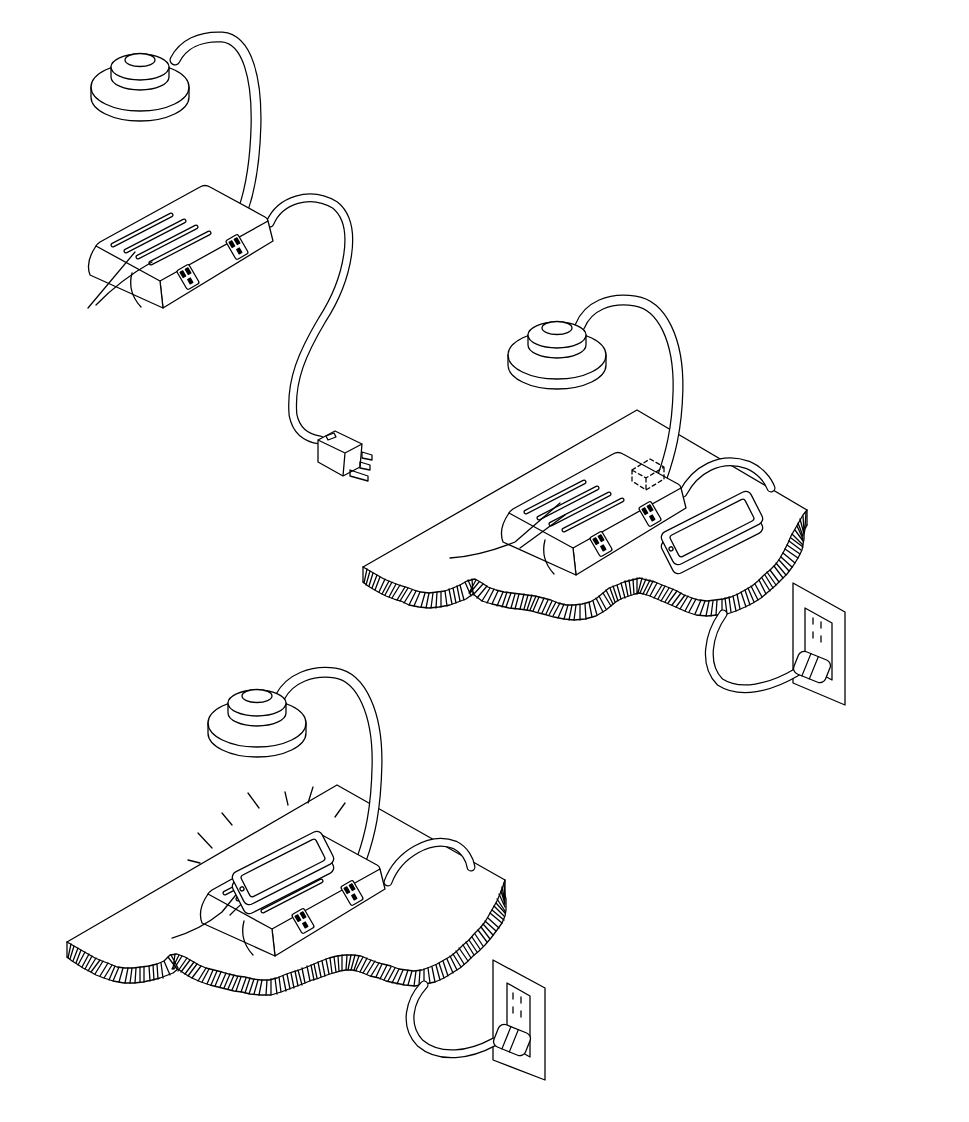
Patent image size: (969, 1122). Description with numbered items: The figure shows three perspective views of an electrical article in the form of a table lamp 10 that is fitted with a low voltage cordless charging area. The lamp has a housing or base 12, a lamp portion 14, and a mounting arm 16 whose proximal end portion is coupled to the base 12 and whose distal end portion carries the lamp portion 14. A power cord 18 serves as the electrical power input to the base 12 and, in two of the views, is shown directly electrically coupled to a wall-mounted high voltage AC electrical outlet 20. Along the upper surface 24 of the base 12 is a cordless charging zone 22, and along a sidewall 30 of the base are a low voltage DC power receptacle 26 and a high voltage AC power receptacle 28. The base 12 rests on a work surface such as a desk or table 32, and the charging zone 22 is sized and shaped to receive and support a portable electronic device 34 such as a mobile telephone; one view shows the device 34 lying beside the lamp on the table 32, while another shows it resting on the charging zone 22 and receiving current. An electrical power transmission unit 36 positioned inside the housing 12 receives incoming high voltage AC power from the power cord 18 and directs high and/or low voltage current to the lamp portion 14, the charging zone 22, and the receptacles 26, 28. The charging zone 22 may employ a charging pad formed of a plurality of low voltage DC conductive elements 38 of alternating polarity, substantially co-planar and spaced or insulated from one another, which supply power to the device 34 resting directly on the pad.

In FIG. 1A, the table lamp 10 is at (345, 89).
In FIG. 1B, the table lamp 10 is at (764, 348).
In FIG. 1C, the table lamp 10 is at (407, 743).
In FIG. 1A, the base 12 is at (189, 225).
In FIG. 1B, the base 12 is at (583, 482).
In FIG. 1C, the base 12 is at (273, 849).
In FIG. 1A, the lamp portion 14 is at (100, 65).
In FIG. 1B, the lamp portion 14 is at (525, 340).
In FIG. 1C, the lamp portion 14 is at (228, 707).
In FIG. 1A, the mounting arm 16 is at (256, 72).
In FIG. 1B, the mounting arm 16 is at (675, 345).
In FIG. 1C, the mounting arm 16 is at (372, 710).
In FIG. 1A, the power cord 18 is at (327, 333).
In FIG. 1B, the power cord 18 is at (745, 466).
In FIG. 1C, the power cord 18 is at (450, 842).
In FIG. 1B, the wall-mounted high voltage AC electrical outlet 20 is at (812, 600).
In FIG. 1C, the wall-mounted high voltage AC electrical outlet 20 is at (510, 978).
In FIG. 1A, the cordless charging zone 22 is at (138, 217).
In FIG. 1B, the cordless charging zone 22 is at (559, 485).
In FIG. 1C, the cordless charging zone 22 is at (221, 881).
In FIG. 1A, the upper surface 24 is at (193, 196).
In FIG. 1B, the upper surface 24 is at (607, 467).
In FIG. 1C, the upper surface 24 is at (358, 857).
In FIG. 1A, the low voltage DC power receptacle 26 is at (200, 291).
In FIG. 1B, the low voltage DC power receptacle 26 is at (589, 568).
In FIG. 1C, the low voltage DC power receptacle 26 is at (327, 912).
In FIG. 1A, the high voltage AC power receptacle 28 is at (258, 257).
In FIG. 1B, the high voltage AC power receptacle 28 is at (675, 503).
In FIG. 1C, the high voltage AC power receptacle 28 is at (379, 886).
In FIG. 1A, the sidewall 30 is at (199, 277).
In FIG. 1B, the sidewall 30 is at (623, 539).
In FIG. 1C, the sidewall 30 is at (321, 912).
In FIG. 1B, the table 32 is at (440, 522).
In FIG. 1C, the table 32 is at (490, 877).
In FIG. 1B, the portable electronic device 34 is at (752, 510).
In FIG. 1C, the portable electronic device 34 is at (270, 868).
In FIG. 1B, the electrical power transmission unit 36 is at (666, 461).
In FIG. 1A, the low voltage DC conductive elements 38 is at (109, 289).
In FIG. 1B, the low voltage DC conductive elements 38 is at (493, 538).
In FIG. 1C, the low voltage DC conductive elements 38 is at (203, 916).